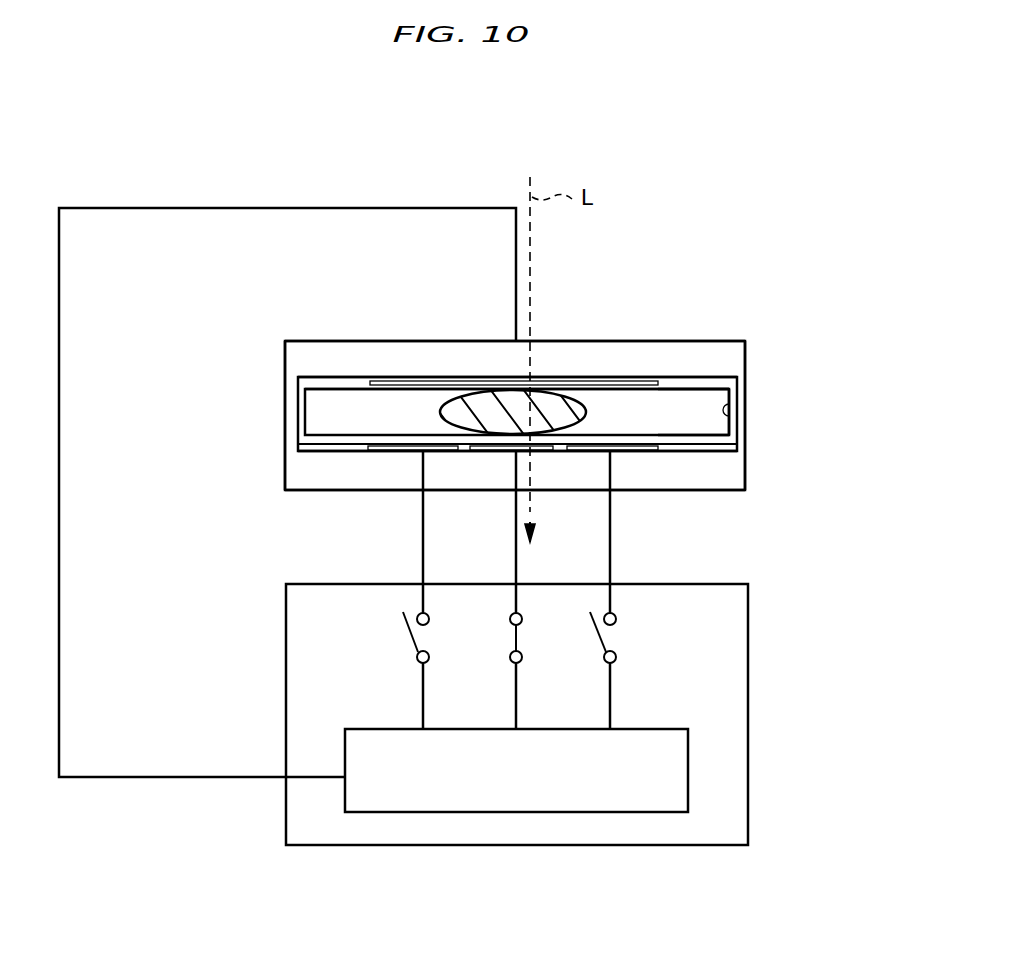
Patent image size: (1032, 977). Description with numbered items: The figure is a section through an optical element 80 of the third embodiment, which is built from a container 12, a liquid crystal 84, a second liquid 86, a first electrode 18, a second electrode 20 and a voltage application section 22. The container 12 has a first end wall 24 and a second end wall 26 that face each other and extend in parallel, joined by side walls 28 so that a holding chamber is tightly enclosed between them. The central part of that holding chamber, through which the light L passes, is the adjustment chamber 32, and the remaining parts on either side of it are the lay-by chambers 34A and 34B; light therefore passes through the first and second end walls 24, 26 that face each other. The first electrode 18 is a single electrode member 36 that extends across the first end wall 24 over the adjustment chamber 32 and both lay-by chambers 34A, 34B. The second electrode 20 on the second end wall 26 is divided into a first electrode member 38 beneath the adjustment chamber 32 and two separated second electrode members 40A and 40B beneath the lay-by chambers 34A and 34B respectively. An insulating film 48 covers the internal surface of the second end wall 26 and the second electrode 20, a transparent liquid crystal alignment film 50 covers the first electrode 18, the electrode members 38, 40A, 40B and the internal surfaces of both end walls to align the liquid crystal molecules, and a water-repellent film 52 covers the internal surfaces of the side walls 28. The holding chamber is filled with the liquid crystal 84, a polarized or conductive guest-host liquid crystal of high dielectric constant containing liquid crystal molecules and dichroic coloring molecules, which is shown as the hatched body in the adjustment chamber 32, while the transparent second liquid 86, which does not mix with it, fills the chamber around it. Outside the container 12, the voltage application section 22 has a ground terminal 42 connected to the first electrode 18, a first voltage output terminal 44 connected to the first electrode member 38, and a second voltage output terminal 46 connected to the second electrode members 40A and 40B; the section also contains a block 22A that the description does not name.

The optical element 80 is at (740, 201).
The container 12 is at (707, 325).
The first electrode 18 is at (481, 365).
The second electrode 20 is at (330, 487).
The voltage application section 22 is at (750, 586).
The voltage source 22A is at (690, 735).
The first end wall 24 is at (665, 340).
The second end wall 26 is at (675, 490).
The side walls 28 is at (285, 428).
The adjustment chamber 32 is at (540, 393).
The lay-by chamber 34A is at (385, 410).
The lay-by chamber 34B is at (678, 400).
The electrode member 36 is at (438, 415).
The first electrode member 38 is at (468, 453).
The second electrode member 40A is at (368, 453).
The second electrode member 40B is at (566, 453).
The ground terminal 42 is at (285, 777).
The first voltage output terminal 44 is at (516, 566).
The second voltage output terminal 46 is at (421, 566).
The insulating film 48 is at (723, 452).
The liquid crystal alignment film 50 is at (703, 395).
The water-repellent film 52 is at (318, 385).
The liquid crystal 84 is at (584, 395).
The second liquid 86 is at (365, 400).